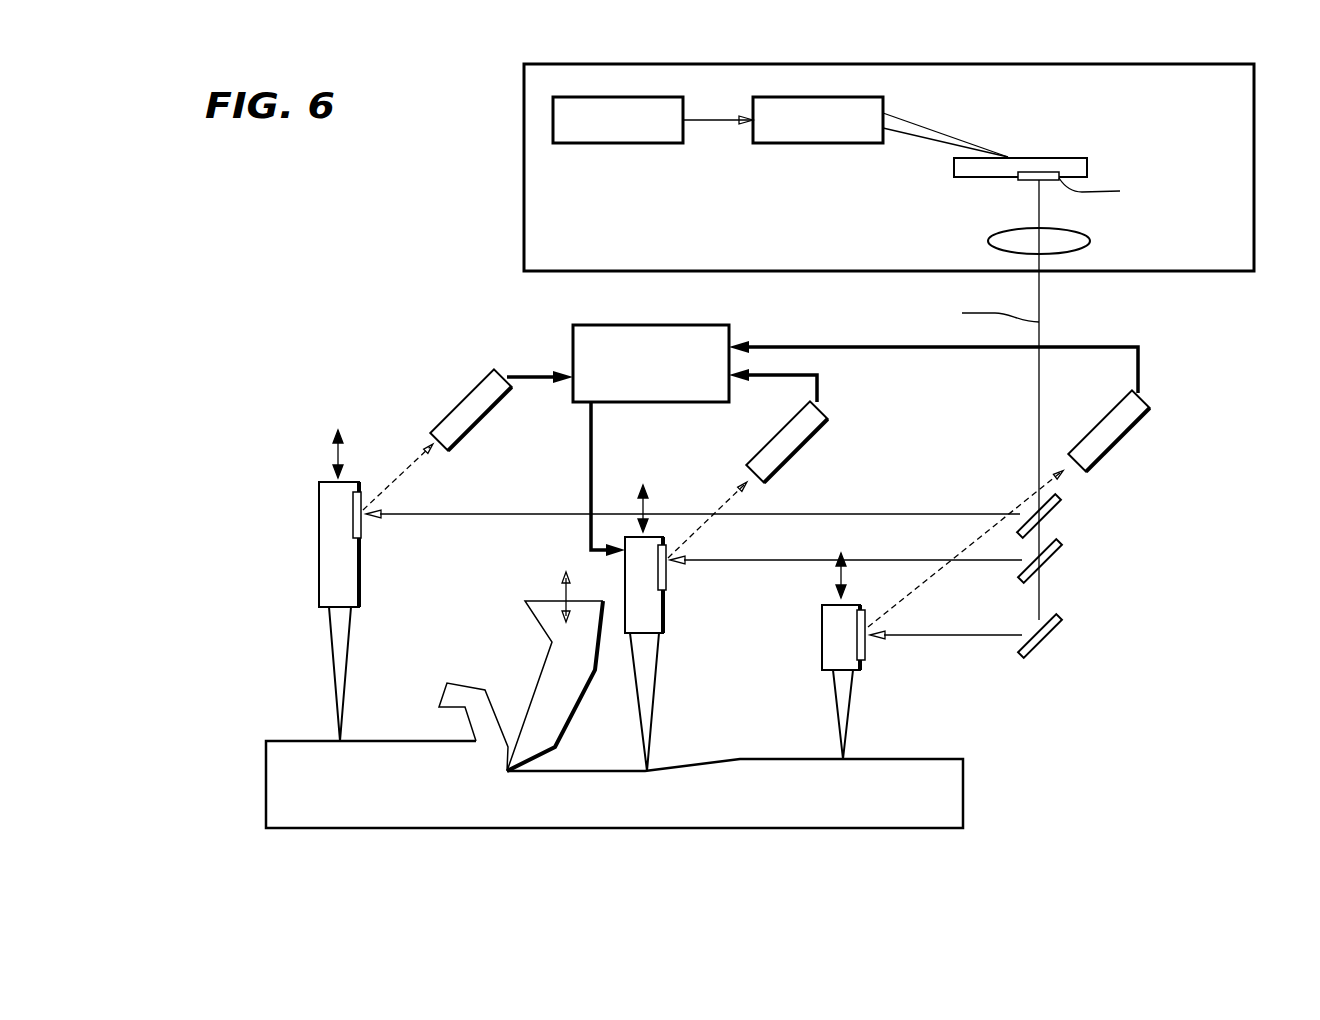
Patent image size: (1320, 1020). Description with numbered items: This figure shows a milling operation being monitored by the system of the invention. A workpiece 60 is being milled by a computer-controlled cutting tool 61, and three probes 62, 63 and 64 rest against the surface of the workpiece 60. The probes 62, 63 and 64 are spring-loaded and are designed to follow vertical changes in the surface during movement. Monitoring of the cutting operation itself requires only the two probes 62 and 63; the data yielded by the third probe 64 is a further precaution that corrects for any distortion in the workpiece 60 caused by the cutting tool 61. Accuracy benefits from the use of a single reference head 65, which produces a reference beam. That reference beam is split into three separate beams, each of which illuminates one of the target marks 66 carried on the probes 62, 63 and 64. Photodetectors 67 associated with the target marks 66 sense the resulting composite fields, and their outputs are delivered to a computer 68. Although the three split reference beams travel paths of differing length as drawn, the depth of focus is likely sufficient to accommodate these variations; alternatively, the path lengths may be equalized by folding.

The workpiece 60 is at (662, 828).
The computer-controlled cutting tool 61 is at (542, 660).
The probe 62 is at (319, 522).
The probe 63 is at (625, 570).
The probe 64 is at (822, 618).
The reference head 65 is at (840, 64).
The target marks 66 is at (353, 530).
The photodetectors 67 is at (456, 400).
The computer 68 is at (573, 340).